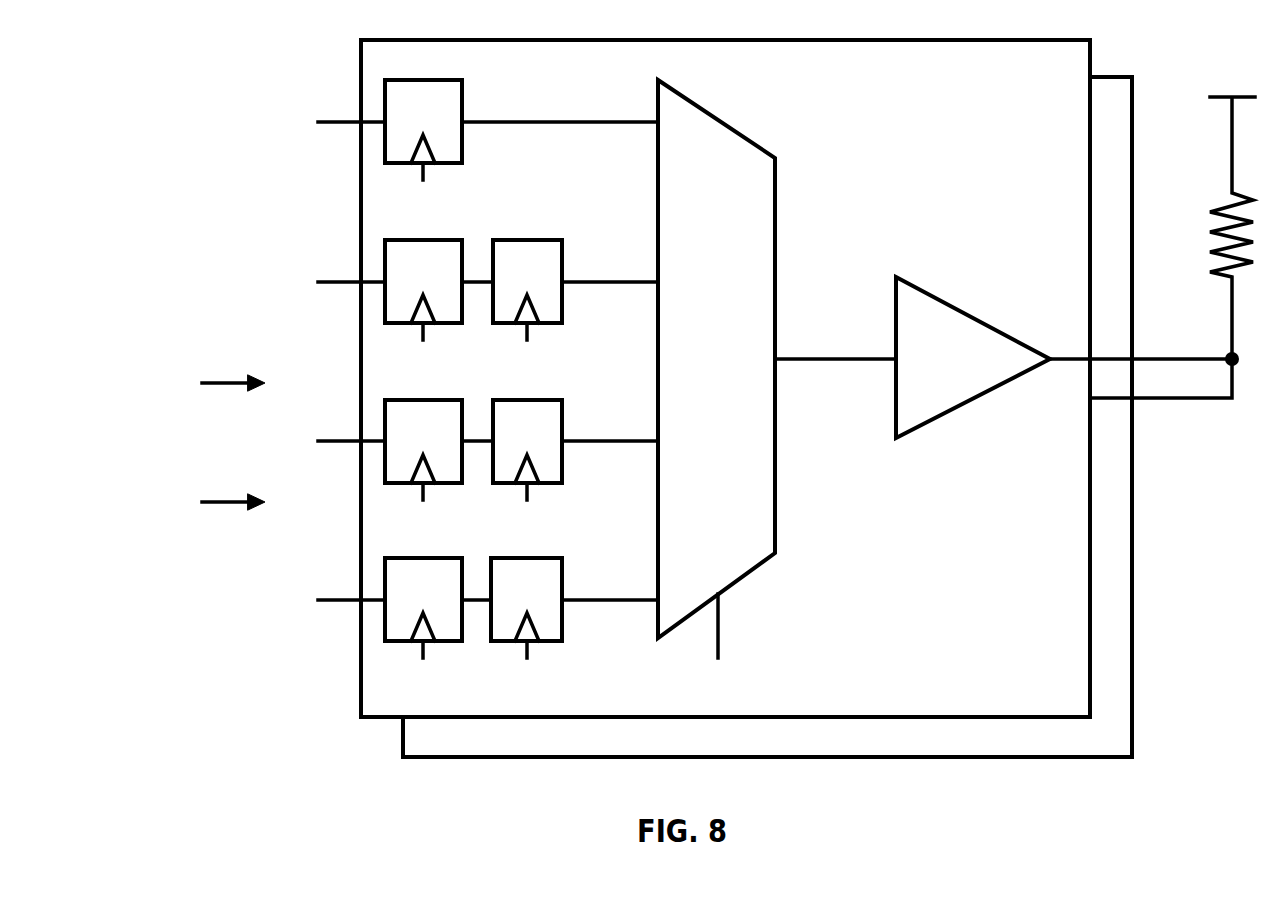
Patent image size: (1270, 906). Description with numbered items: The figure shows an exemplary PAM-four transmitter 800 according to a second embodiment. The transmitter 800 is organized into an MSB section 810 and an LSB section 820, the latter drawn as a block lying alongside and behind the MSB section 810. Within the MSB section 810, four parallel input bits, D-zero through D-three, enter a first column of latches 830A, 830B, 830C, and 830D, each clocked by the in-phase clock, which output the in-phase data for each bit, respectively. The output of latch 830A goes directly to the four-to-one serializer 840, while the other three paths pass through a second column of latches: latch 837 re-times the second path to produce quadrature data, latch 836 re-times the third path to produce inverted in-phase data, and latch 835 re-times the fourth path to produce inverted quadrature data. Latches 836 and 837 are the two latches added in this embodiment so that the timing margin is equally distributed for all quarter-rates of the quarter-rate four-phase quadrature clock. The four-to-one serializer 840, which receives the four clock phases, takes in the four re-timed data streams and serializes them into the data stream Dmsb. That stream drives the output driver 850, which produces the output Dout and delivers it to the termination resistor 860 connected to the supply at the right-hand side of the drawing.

The PAM-4 transmitter 800 is at (304, 18).
The MSB section 810 is at (1090, 65).
The LSB section 820 is at (1132, 593).
The latch 830A is at (452, 128).
The latch 830B is at (452, 288).
The latch 830C is at (452, 448).
The latch 830D is at (452, 606).
The latch 835 is at (548, 606).
The latch 836 is at (548, 448).
The latch 837 is at (548, 288).
The 4:1 serializer 840 is at (713, 118).
The output driver 850 is at (935, 300).
The termination resistor 860 is at (1200, 185).